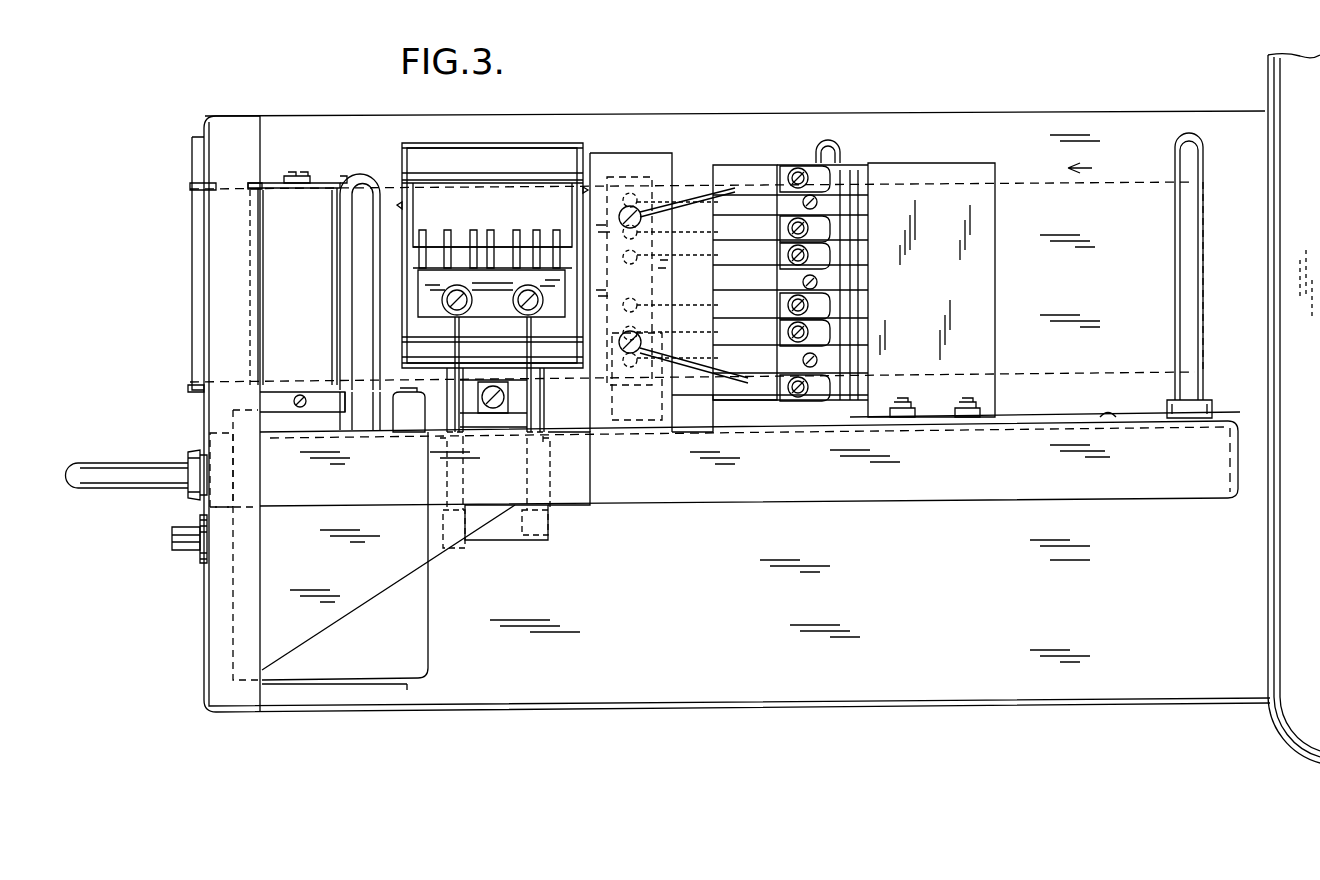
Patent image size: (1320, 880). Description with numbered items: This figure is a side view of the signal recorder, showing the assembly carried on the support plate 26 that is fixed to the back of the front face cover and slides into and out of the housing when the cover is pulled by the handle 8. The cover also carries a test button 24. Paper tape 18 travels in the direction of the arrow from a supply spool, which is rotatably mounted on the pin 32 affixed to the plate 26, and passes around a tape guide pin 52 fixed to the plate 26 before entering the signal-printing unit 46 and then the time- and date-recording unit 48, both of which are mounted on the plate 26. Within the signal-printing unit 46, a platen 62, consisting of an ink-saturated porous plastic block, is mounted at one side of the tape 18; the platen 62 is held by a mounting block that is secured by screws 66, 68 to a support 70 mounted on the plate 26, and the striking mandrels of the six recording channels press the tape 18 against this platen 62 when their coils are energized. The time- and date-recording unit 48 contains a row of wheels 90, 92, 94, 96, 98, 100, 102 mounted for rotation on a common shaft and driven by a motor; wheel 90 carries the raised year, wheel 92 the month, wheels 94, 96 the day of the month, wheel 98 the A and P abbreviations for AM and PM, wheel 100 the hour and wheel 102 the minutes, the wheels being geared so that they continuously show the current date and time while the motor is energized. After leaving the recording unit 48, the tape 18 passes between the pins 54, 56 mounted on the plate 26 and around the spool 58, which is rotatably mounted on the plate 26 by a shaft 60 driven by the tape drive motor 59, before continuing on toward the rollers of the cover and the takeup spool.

The handle 8 is at (103, 466).
The tape 18 is at (1133, 183).
The test button 24 is at (172, 539).
The support plate 26 is at (832, 499).
The pin 32 is at (829, 142).
The signal-printing unit 46 is at (910, 152).
The time- and date-recording unit 48 is at (557, 136).
The tape guide pin 52 is at (1184, 131).
The pin 54 is at (350, 178).
The pin 56 is at (378, 178).
The spool 58 is at (316, 197).
The tape drive motor 59 is at (420, 647).
The shaft 60 is at (295, 173).
The platen 62 is at (638, 175).
The screw 66 is at (650, 217).
The screw 68 is at (650, 349).
The support 70 is at (668, 413).
The wheel 90 is at (431, 246).
The wheel 92 is at (455, 246).
The wheel 94 is at (476, 248).
The wheel 96 is at (491, 248).
The wheel 98 is at (513, 248).
The wheel 100 is at (535, 248).
The wheel 102 is at (555, 248).